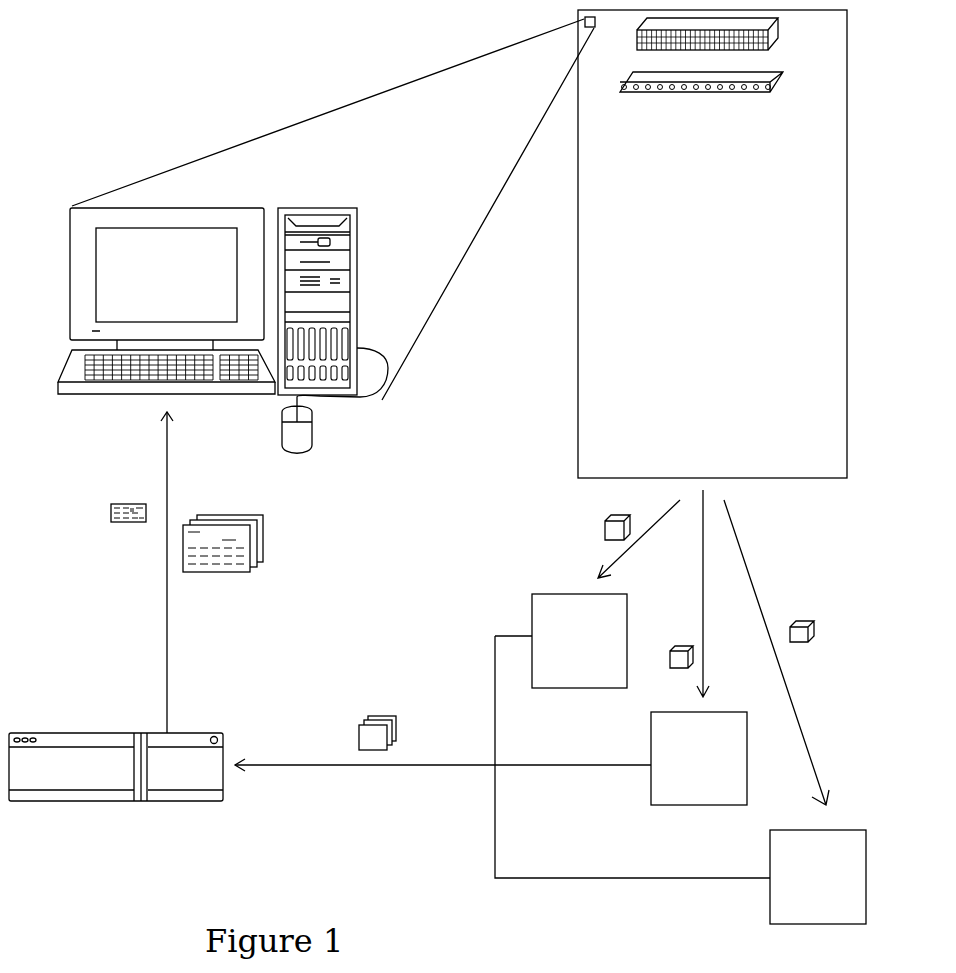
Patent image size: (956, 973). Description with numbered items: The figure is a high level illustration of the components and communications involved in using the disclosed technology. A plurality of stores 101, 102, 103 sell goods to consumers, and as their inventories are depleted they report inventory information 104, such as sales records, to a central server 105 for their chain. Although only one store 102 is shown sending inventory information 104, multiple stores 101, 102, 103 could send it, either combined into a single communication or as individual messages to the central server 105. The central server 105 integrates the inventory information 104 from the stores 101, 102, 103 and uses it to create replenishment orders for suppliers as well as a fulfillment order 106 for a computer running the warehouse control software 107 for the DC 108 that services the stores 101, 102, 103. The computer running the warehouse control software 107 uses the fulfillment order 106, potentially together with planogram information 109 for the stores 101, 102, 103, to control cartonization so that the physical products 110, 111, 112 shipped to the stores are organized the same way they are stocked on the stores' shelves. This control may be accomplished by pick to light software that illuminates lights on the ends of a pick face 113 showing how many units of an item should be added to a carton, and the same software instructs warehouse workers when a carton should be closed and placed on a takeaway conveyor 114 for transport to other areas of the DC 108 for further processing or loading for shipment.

The store 101 is at (579, 654).
The store 102 is at (699, 771).
The store 103 is at (818, 888).
The inventory information 104 is at (359, 733).
The central server 105 is at (116, 781).
The fulfillment order 106 is at (107, 516).
The computer running the warehouse control software 107 is at (208, 330).
The DC 108 is at (736, 244).
The planogram information 109 is at (223, 559).
The physical product 110 is at (597, 526).
The physical product 111 is at (675, 641).
The physical product 112 is at (809, 617).
The pick face 113 is at (729, 34).
The takeaway conveyor 114 is at (701, 96).